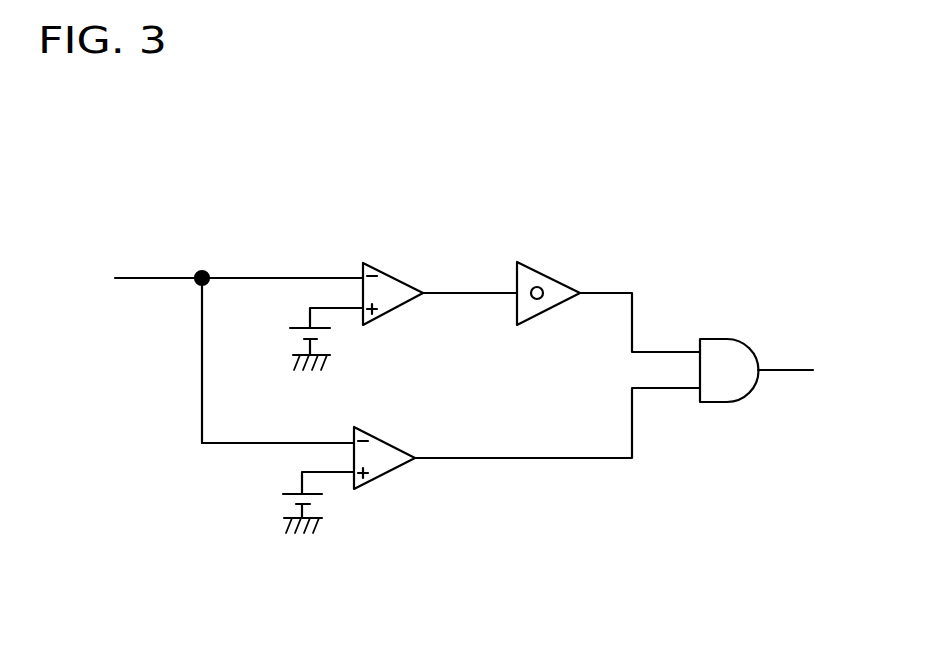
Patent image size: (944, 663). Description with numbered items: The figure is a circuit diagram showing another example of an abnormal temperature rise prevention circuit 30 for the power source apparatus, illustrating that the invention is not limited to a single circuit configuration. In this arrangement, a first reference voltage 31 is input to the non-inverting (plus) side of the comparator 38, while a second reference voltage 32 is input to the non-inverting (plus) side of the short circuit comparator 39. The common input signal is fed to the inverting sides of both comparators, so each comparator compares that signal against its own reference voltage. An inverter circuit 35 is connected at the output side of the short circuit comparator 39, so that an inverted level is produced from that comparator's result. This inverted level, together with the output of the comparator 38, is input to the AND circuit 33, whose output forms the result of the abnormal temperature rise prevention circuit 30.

The abnormal temperature rise prevention circuit 30 is at (670, 232).
The first reference voltage 31 is at (295, 493).
The second reference voltage 32 is at (318, 331).
The AND circuit 33 is at (728, 339).
The inverter circuit 35 is at (555, 278).
The comparator 38 is at (388, 475).
The short circuit comparator 39 is at (394, 273).